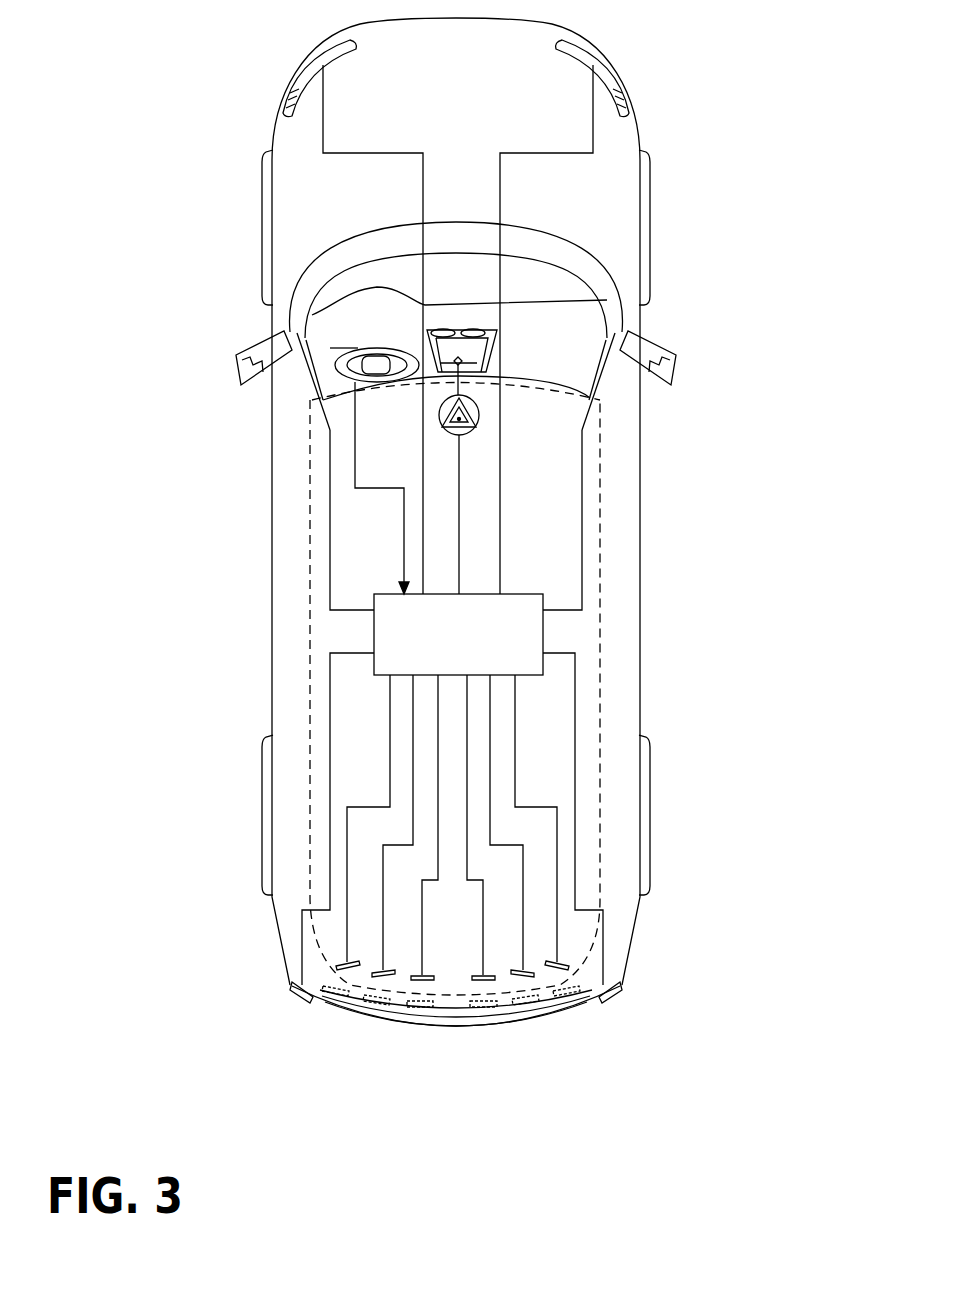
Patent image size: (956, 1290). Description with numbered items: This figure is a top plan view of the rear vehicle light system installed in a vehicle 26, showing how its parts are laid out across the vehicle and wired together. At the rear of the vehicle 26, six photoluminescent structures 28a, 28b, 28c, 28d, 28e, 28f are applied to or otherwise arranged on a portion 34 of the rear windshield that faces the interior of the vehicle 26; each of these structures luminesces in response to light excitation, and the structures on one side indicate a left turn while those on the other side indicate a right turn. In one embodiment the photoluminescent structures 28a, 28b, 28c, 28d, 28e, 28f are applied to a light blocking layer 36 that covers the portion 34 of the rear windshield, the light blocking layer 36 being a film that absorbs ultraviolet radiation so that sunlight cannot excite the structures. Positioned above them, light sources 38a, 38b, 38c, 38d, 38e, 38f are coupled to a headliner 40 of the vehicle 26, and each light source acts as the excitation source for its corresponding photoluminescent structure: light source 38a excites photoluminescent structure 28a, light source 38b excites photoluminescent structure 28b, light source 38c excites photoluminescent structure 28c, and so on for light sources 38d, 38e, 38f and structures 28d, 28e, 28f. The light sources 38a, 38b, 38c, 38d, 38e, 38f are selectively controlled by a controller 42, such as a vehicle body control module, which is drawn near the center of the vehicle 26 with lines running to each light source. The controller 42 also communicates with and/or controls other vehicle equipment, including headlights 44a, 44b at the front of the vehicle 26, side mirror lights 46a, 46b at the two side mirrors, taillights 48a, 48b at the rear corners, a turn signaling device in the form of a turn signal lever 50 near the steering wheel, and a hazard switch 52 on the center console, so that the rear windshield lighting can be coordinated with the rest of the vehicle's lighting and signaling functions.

The vehicle 26 is at (695, 123).
The photoluminescent structure 28a is at (334, 1000).
The photoluminescent structure 28b is at (378, 1008).
The photoluminescent structure 28c is at (421, 1011).
The photoluminescent structure 28d is at (490, 1011).
The photoluminescent structure 28e is at (528, 1008).
The photoluminescent structure 28f is at (568, 1000).
The portion of the rear windshield 34 is at (586, 1005).
The light blocking layer 36 is at (322, 993).
The light source 38a is at (346, 970).
The light source 38b is at (383, 978).
The light source 38c is at (423, 982).
The light source 38d is at (484, 982).
The light source 38e is at (523, 978).
The light source 38f is at (557, 970).
The headliner 40 is at (604, 522).
The controller 42 is at (545, 630).
The headlight 44a is at (330, 46).
The headlight 44b is at (582, 46).
The side mirror light 46a is at (236, 357).
The side mirror light 46b is at (677, 360).
The taillight 48a is at (306, 996).
The taillight 48b is at (612, 988).
The turn signal lever 50 is at (337, 347).
The hazard switch 52 is at (443, 430).